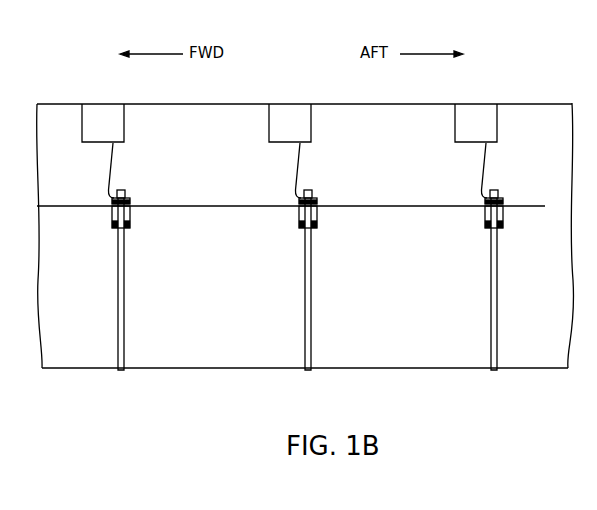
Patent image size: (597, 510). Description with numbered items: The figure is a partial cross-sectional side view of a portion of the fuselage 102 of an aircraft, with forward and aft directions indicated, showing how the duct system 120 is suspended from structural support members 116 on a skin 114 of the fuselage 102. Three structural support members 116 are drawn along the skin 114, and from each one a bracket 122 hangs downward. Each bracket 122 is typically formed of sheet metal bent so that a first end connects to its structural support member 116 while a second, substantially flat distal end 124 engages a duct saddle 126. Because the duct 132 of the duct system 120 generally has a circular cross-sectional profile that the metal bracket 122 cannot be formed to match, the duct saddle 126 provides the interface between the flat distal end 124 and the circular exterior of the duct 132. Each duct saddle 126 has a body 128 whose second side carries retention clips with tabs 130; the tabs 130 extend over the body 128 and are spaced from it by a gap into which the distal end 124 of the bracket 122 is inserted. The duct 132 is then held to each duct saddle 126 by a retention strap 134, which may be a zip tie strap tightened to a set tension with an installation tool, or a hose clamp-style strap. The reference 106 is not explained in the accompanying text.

The aircraft structure 106 is at (289, 217).
The fuselage 102 is at (304, 86).
The skin 114 is at (170, 103).
The structural support member 116 is at (117, 118).
The bracket 122 is at (120, 162).
The distal end 124 is at (100, 192).
The tab 130 is at (127, 199).
The duct saddle 126 is at (137, 202).
The body 128 is at (132, 223).
The retention strap 134 is at (118, 242).
The duct system 120 is at (305, 389).
The duct 132 is at (168, 355).